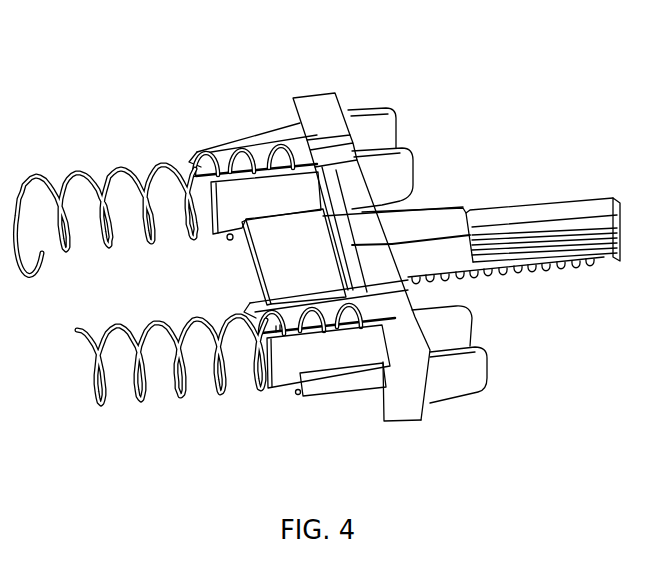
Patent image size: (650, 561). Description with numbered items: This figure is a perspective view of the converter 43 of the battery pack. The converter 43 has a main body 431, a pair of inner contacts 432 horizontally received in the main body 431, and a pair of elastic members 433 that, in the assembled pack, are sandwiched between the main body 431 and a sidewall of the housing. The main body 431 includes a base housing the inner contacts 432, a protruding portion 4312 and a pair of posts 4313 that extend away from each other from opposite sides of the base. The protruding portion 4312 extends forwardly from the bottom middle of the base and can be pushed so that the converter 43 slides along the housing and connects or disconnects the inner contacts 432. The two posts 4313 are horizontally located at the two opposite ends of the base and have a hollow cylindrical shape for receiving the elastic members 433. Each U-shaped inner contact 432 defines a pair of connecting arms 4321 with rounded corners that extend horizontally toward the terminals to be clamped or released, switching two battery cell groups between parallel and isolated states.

The converter 43 is at (190, 72).
The main body 431 is at (318, 107).
The protruding portion 4312 is at (527, 212).
The posts 4313 is at (263, 148).
The connecting arms 4321 is at (395, 112).
The inner contacts 432 is at (460, 387).
The elastic members 433 is at (103, 400).